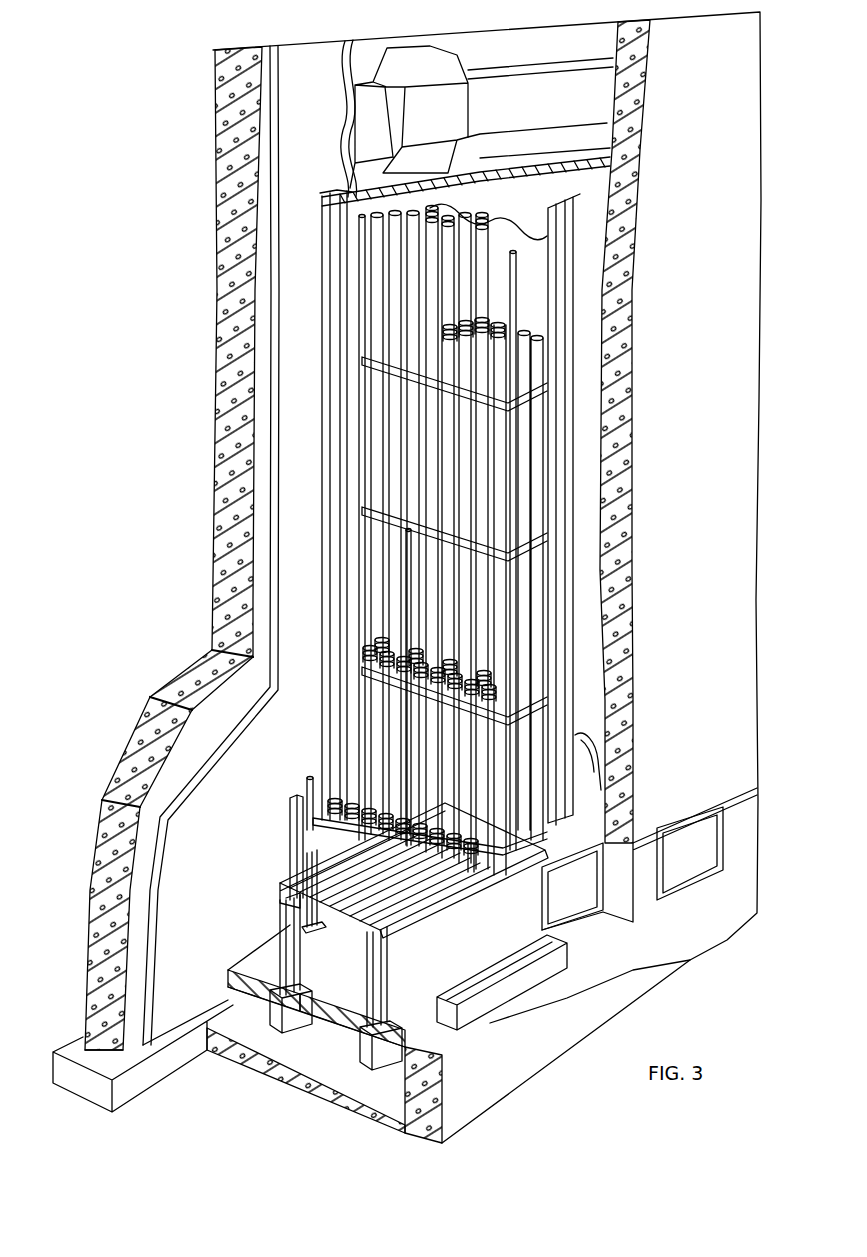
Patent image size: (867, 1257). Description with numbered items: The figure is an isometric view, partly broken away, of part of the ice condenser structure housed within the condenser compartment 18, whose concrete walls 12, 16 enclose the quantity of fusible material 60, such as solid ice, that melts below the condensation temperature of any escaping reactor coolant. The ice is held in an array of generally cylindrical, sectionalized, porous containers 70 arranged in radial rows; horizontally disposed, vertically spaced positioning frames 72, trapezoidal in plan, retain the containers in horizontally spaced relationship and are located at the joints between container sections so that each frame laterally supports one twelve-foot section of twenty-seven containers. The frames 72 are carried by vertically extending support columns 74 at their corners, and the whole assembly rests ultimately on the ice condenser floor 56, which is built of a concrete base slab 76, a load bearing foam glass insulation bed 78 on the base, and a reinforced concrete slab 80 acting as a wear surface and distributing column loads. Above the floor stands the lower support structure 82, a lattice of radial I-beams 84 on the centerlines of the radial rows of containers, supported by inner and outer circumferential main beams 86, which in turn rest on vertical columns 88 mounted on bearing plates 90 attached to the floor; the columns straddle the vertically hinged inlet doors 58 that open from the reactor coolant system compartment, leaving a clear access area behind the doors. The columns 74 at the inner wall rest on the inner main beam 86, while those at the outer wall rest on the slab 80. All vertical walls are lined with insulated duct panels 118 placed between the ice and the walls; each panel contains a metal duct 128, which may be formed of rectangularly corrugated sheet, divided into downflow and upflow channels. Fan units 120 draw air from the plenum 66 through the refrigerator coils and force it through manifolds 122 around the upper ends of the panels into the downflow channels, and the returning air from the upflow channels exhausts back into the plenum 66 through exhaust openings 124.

The outer wall 12 is at (752, 547).
The side wall 16 is at (213, 353).
The condenser compartment 18 is at (304, 733).
The ice condenser floor 56 is at (284, 1116).
The inlet doors 58 is at (598, 905).
The fusible material 60 is at (476, 619).
The plenum 66 is at (608, 47).
The porous containers 70 is at (370, 398).
The positioning frames 72 is at (367, 509).
The support columns 74 is at (410, 596).
The concrete base slab 76 is at (262, 1068).
The foam glass insulation bed 78 is at (333, 1035).
The reinforced concrete slab 80 is at (256, 957).
The lower support structure 82 is at (464, 929).
The radial I-beams 84 is at (360, 912).
The main beams 86 is at (280, 898).
The vertical columns 88 is at (300, 967).
The bearing plates 90 is at (300, 990).
The insulated duct panels 118 is at (334, 277).
The fan units 120 is at (447, 63).
The manifolds 122 is at (531, 85).
The exhaust openings 124 is at (440, 176).
The metal duct 128 is at (294, 827).